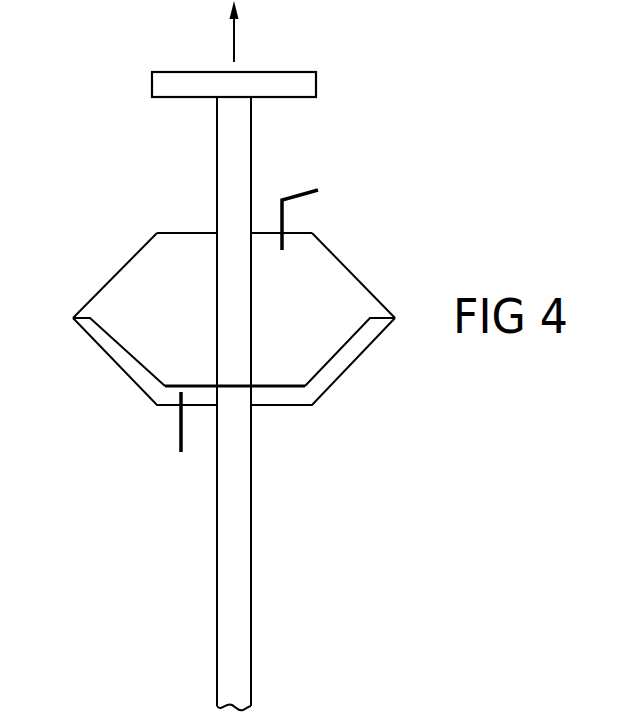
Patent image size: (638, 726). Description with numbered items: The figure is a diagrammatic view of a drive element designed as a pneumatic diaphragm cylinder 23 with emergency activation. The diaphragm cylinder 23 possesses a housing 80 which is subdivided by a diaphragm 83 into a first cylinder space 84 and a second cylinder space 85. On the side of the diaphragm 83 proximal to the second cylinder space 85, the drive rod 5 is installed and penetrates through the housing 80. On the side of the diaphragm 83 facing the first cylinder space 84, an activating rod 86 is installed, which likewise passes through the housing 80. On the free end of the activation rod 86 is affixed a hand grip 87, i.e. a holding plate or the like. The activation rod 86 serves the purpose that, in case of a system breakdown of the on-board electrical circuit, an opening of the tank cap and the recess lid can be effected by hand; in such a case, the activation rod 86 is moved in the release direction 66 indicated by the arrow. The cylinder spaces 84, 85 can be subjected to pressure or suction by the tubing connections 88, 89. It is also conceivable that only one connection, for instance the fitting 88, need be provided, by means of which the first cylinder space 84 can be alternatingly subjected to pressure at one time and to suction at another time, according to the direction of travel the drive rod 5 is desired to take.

The drive rod 5 is at (232, 568).
The pneumatic diaphragm cylinder 23 is at (231, 297).
The release direction 66 is at (233, 38).
The housing 80 is at (115, 277).
The diaphragm 83 is at (138, 357).
The first cylinder space 84 is at (158, 258).
The second cylinder space 85 is at (342, 360).
The activating rod 86 is at (236, 152).
The hand grip 87 is at (285, 82).
The tubing connection 88 is at (308, 187).
The tubing connection 89 is at (178, 432).